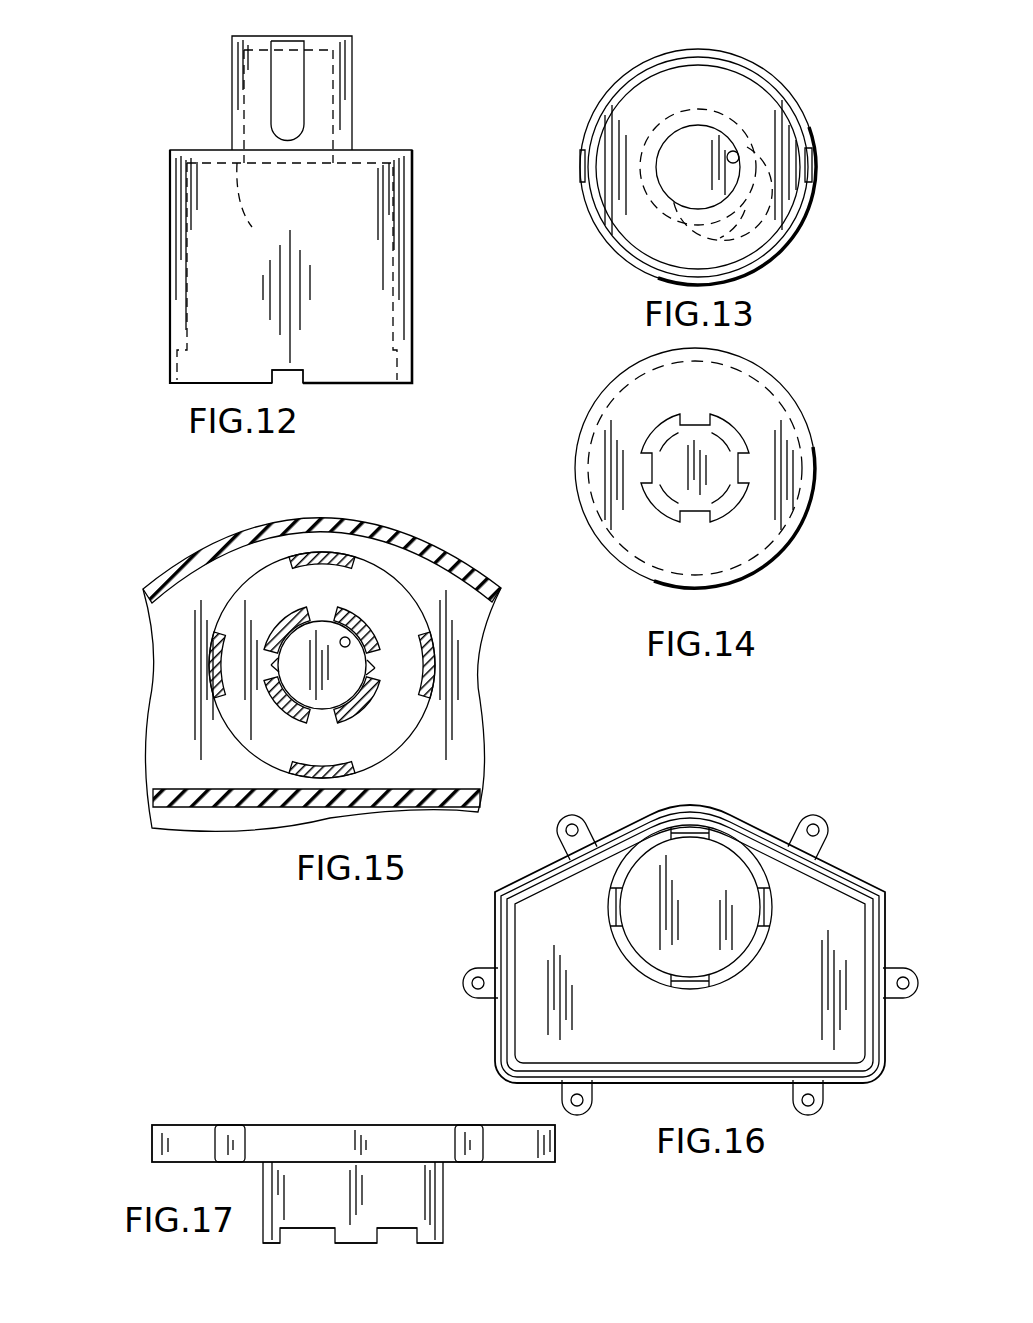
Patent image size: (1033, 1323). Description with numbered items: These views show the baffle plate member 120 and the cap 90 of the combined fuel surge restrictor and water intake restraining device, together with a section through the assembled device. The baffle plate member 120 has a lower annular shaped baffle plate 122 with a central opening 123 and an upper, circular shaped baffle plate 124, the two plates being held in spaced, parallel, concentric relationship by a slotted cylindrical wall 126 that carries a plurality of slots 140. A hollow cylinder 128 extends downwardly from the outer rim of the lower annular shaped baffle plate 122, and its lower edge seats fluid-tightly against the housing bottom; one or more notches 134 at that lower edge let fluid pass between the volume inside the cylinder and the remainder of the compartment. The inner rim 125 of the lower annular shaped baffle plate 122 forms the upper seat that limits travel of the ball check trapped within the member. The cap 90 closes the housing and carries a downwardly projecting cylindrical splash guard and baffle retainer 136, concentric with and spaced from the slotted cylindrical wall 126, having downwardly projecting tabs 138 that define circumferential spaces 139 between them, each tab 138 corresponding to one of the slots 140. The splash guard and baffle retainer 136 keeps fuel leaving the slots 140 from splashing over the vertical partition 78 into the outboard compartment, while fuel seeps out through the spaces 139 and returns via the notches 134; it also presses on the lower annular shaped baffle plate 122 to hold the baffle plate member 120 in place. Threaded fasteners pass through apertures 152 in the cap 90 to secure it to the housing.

In FIG. 15, the vertical partition 78 is at (446, 793).
In FIG. 16, the cap 90 is at (866, 874).
In FIG. 17, the cap 90 is at (285, 1140).
In FIG. 12, the baffle plate member 120 is at (338, 213).
In FIG. 14, the baffle plate member 120 is at (717, 500).
In FIG. 12, the lower annular shaped baffle plate 122 is at (362, 157).
In FIG. 13, the lower annular shaped baffle plate 122 is at (688, 73).
In FIG. 14, the lower annular shaped baffle plate 122 is at (750, 405).
In FIG. 13, the central opening 123 is at (662, 142).
In FIG. 15, the central opening 123 is at (345, 642).
In FIG. 12, the upper circular shaped baffle plate 124 is at (316, 41).
In FIG. 13, the upper circular shaped baffle plate 124 is at (668, 179).
In FIG. 14, the upper circular shaped baffle plate 124 is at (725, 462).
In FIG. 12, the inner rim 125 is at (264, 202).
In FIG. 13, the inner rim 125 is at (739, 157).
In FIG. 12, the slotted cylindrical wall 126 is at (321, 99).
In FIG. 14, the slotted cylindrical wall 126 is at (652, 432).
In FIG. 12, the hollow cylinder 128 is at (369, 217).
In FIG. 13, the hollow cylinder 128 is at (628, 68).
In FIG. 14, the hollow cylinder 128 is at (752, 375).
In FIG. 12, the notches 134 is at (292, 383).
In FIG. 13, the notches 134 is at (813, 167).
In FIG. 16, the splash guard and baffle retainer 136 is at (733, 832).
In FIG. 17, the splash guard and baffle retainer 136 is at (417, 1193).
In FIG. 15, the tabs 138 is at (331, 552).
In FIG. 16, the tabs 138 is at (683, 832).
In FIG. 17, the tabs 138 is at (387, 1233).
In FIG. 15, the circumferential spaces 139 is at (253, 582).
In FIG. 16, the circumferential spaces 139 is at (650, 845).
In FIG. 17, the circumferential spaces 139 is at (297, 1228).
In FIG. 13, the slots 140 is at (785, 240).
In FIG. 15, the slots 140 is at (271, 665).
In FIG. 16, the apertures 152 is at (578, 822).